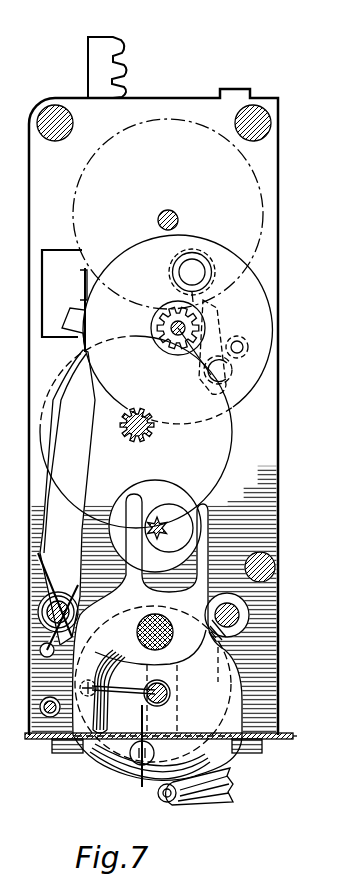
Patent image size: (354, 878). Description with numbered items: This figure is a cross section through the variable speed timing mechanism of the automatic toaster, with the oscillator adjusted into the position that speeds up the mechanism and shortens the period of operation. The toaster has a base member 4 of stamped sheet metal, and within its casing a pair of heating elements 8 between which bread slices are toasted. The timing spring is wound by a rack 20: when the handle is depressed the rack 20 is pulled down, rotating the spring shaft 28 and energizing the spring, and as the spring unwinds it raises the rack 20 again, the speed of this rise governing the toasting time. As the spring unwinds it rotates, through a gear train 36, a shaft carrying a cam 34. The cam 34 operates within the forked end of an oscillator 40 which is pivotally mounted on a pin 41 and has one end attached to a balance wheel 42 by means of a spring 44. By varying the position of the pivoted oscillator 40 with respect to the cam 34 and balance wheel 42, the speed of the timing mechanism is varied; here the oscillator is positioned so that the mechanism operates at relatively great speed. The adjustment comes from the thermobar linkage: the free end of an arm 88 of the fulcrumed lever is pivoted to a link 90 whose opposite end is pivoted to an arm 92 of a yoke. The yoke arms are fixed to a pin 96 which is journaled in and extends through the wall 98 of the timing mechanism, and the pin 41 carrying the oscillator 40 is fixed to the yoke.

The base member 4 is at (291, 738).
The heating elements 8 is at (323, 728).
The rack 20 is at (121, 48).
The spring shaft 28 is at (170, 210).
The cam 34 is at (170, 510).
The gear train 36 is at (272, 265).
The oscillator 40 is at (200, 566).
The pin 41 is at (163, 640).
The balance wheel 42 is at (117, 771).
The spring 44 is at (147, 725).
The arm 88 is at (226, 802).
The link 90 is at (157, 691).
The arm 92 is at (156, 684).
The pin 96 is at (250, 617).
The wall 98 is at (282, 688).